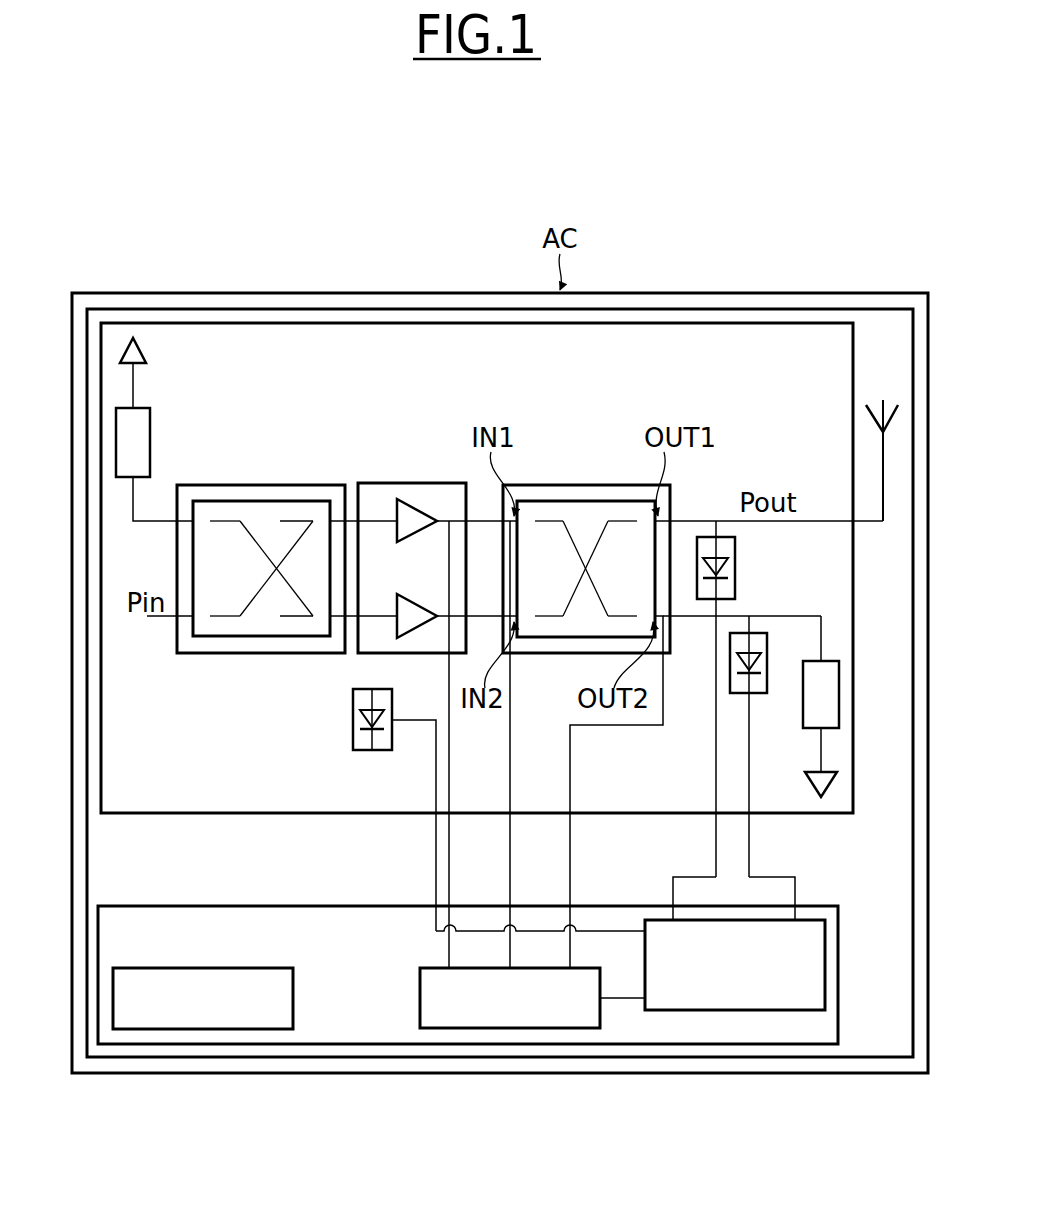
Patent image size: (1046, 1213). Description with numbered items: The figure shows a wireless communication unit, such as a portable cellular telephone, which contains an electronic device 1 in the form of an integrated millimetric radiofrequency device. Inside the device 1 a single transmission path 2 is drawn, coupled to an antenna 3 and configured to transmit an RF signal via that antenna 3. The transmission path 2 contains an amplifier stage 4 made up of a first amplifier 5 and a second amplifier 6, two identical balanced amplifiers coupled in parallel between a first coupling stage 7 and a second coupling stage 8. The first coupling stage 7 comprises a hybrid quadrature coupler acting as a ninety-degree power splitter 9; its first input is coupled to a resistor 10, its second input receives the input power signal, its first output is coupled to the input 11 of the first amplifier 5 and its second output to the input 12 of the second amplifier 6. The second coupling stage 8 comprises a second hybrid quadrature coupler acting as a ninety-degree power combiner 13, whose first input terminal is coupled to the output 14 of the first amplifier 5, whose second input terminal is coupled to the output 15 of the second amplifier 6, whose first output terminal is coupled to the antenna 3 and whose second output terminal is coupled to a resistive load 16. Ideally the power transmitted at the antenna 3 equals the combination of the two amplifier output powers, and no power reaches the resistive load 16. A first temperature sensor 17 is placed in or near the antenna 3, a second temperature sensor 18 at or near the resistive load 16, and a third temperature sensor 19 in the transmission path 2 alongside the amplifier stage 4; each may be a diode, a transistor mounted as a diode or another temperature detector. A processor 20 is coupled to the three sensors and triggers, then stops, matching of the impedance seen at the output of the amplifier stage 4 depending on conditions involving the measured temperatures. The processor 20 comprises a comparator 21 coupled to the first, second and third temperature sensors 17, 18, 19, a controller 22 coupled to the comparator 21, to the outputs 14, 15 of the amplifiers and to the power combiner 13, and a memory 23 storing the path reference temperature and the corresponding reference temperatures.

The electronic device 1 is at (498, 306).
The transmission path 2 is at (146, 817).
The antenna 3 is at (891, 414).
The amplifier stage 4 is at (410, 480).
The first amplifier 5 is at (417, 520).
The second amplifier 6 is at (417, 616).
The first coupling stage 7 is at (287, 482).
The second coupling stage 8 is at (612, 482).
The power splitter 9 is at (222, 497).
The resistor 10 is at (133, 407).
The input of the first amplifier 11 is at (363, 511).
The input of the second amplifier 12 is at (363, 605).
The power combiner 13 is at (548, 497).
The output of the first amplifier 14 is at (474, 511).
The output of the second amplifier 15 is at (474, 605).
The resistive load 16 is at (821, 706).
The first temperature sensor 17 is at (735, 568).
The second temperature sensor 18 is at (767, 663).
The third temperature sensor 19 is at (353, 725).
The processor 20 is at (215, 902).
The comparator 21 is at (735, 965).
The controller 22 is at (510, 998).
The memory 23 is at (203, 998).